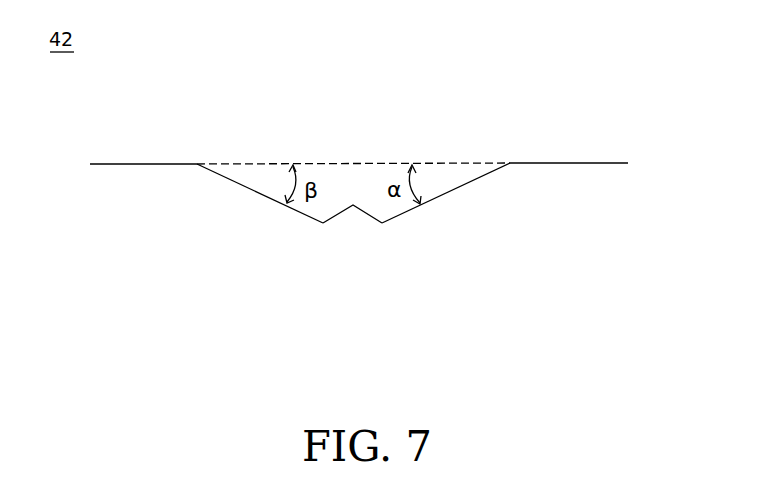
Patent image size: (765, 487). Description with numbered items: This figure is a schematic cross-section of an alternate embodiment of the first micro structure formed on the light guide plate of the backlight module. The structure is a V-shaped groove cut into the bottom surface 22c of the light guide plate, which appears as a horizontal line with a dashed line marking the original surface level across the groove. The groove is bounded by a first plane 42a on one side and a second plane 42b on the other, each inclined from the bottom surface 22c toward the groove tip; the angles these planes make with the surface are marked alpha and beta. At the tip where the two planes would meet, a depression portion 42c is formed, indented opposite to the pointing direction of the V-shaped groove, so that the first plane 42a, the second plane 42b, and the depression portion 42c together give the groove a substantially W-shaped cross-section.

The bottom surface 22c is at (577, 163).
The first plane 42a is at (433, 202).
The second plane 42b is at (295, 210).
The depression portion 42c is at (353, 218).